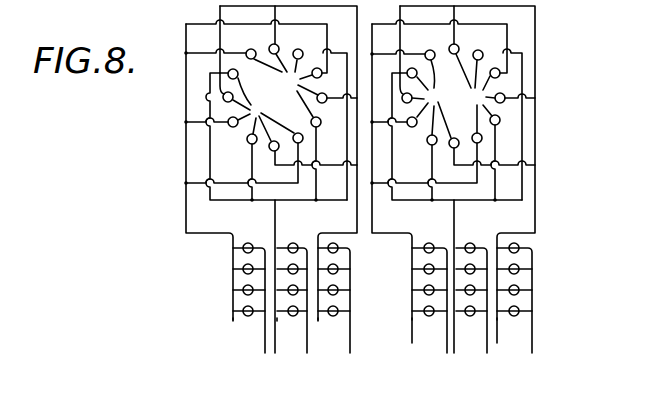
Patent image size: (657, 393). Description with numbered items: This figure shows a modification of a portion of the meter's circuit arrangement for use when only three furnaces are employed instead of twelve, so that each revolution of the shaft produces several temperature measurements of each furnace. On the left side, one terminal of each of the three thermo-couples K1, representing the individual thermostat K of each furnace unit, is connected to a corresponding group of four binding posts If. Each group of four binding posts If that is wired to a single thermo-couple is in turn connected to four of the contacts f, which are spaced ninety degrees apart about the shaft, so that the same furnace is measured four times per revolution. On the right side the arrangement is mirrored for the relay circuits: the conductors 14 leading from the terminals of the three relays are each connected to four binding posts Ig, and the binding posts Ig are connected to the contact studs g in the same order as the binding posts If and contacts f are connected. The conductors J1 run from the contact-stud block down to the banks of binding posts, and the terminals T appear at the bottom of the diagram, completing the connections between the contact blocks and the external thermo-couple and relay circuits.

The contacts f is at (275, 97).
The contact studs g is at (453, 96).
The conductors J1 is at (187, 221).
The binding posts If is at (358, 282).
The thermo-couples K1 is at (226, 339).
The thermostat K is at (303, 338).
The binding posts Ig is at (519, 310).
The conductors 14 is at (424, 347).
The terminals T is at (157, 392).